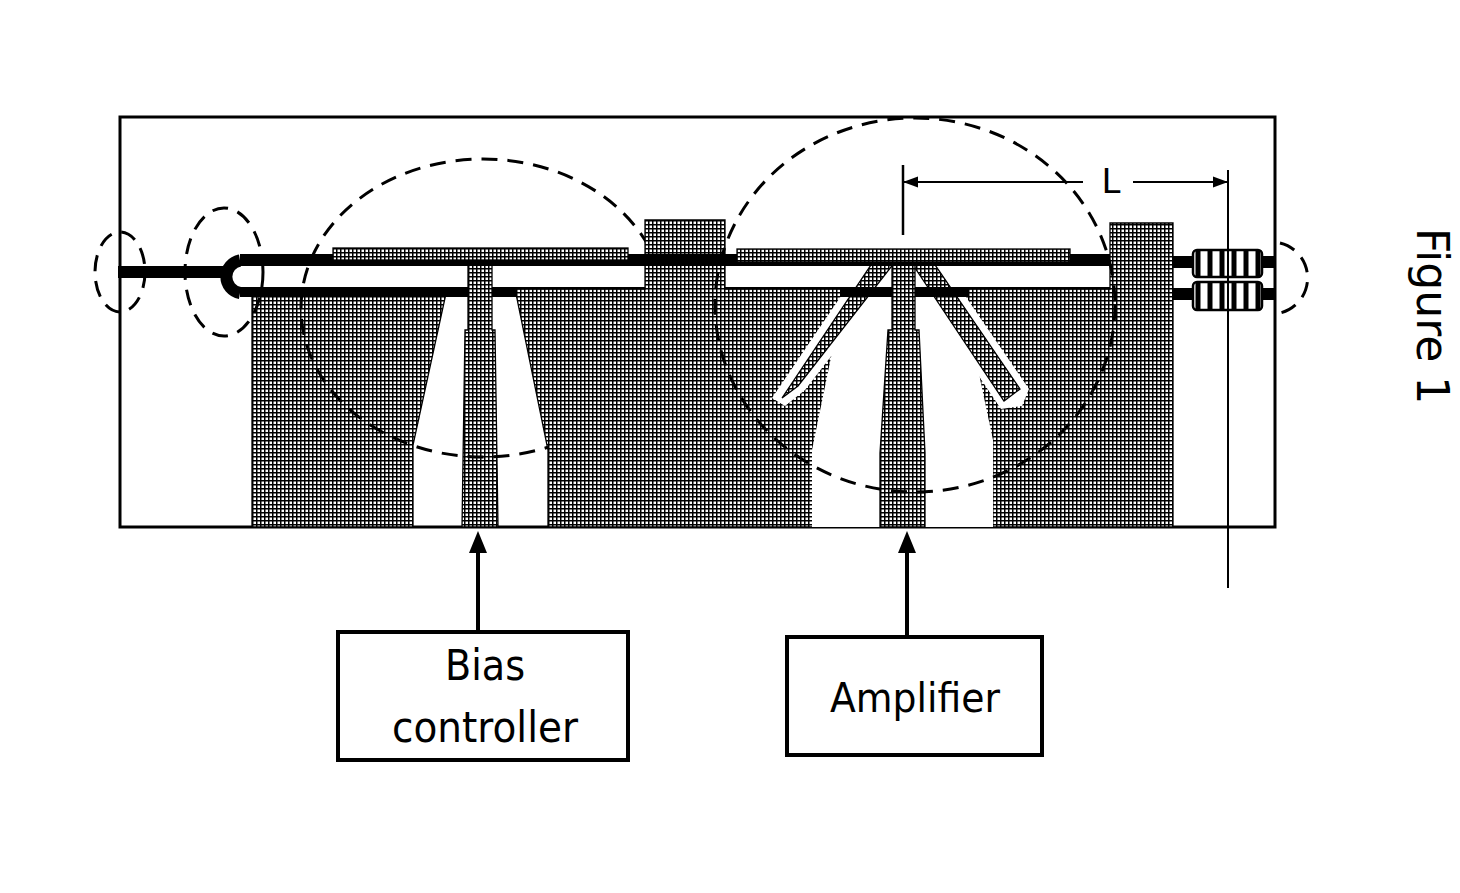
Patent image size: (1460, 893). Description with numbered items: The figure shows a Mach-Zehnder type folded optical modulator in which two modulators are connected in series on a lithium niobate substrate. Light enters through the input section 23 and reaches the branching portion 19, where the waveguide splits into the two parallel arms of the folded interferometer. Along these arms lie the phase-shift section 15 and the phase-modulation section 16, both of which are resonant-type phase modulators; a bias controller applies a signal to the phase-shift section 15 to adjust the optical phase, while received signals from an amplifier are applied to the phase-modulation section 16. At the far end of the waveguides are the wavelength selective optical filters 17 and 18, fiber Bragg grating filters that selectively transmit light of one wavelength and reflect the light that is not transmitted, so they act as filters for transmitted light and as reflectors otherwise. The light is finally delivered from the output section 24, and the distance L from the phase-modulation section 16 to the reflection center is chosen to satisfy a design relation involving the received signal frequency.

The phase-shift section 15 is at (487, 162).
The phase-modulation section 16 is at (992, 138).
The wavelength selective optical filter 17 is at (1228, 248).
The wavelength selective optical filter 18 is at (1242, 401).
The branching portion 19 is at (225, 217).
The input section 23 is at (140, 253).
The output section 24 is at (1297, 308).